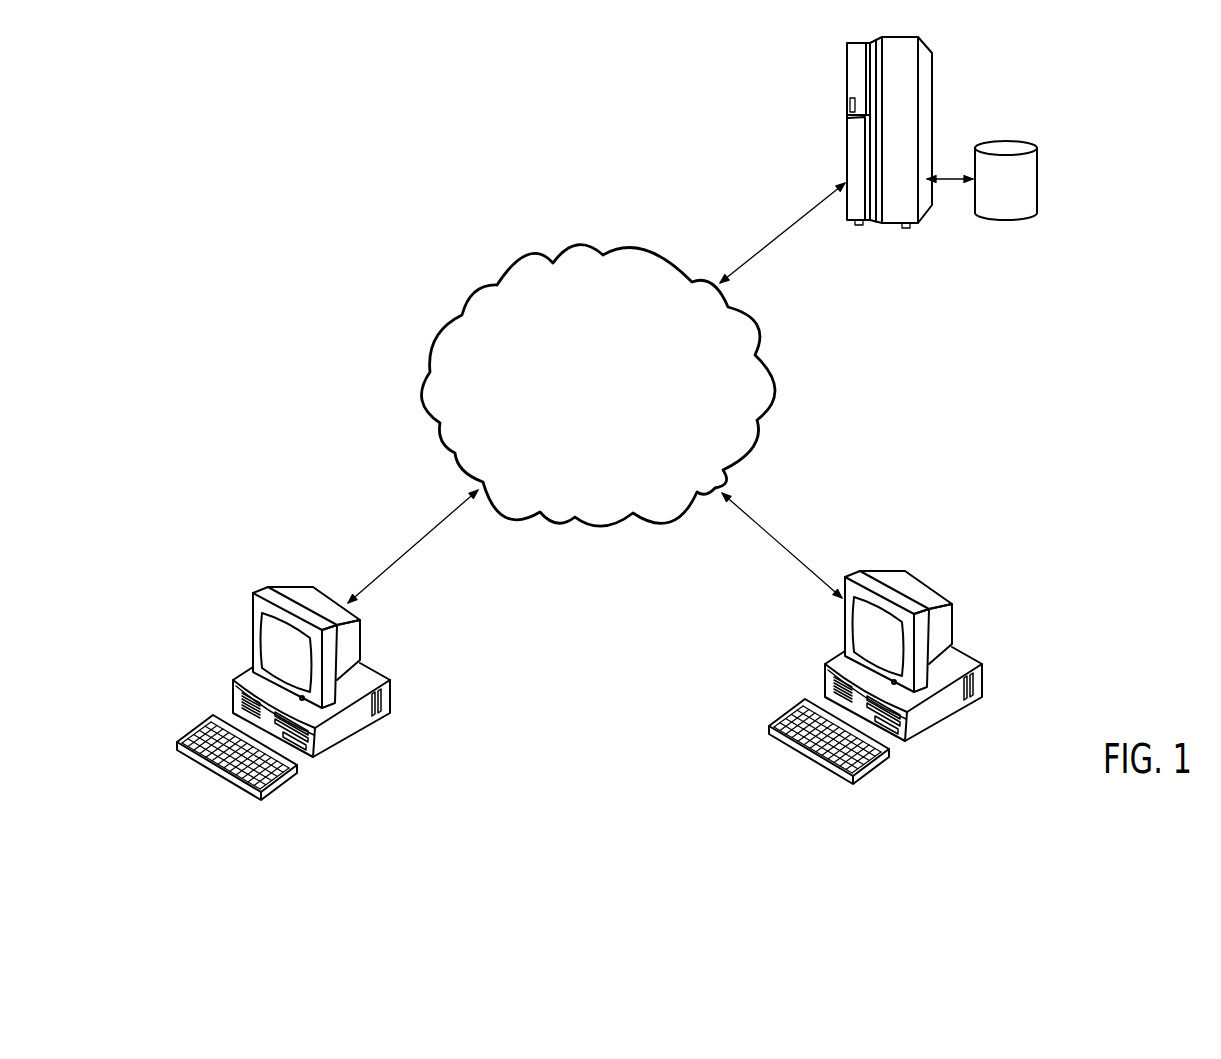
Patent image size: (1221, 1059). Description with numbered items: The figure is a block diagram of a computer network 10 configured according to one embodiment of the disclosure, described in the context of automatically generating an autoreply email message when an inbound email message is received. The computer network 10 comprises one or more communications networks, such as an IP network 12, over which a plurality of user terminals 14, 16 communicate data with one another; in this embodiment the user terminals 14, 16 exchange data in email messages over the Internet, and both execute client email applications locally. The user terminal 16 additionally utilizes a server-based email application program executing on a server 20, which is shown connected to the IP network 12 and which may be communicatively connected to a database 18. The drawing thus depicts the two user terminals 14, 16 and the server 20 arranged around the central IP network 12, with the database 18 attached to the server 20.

The computer network 10 is at (265, 150).
The IP network 12 is at (609, 455).
The user terminal 14 is at (268, 572).
The user terminal 16 is at (942, 555).
The database 18 is at (1052, 157).
The server 20 is at (947, 78).